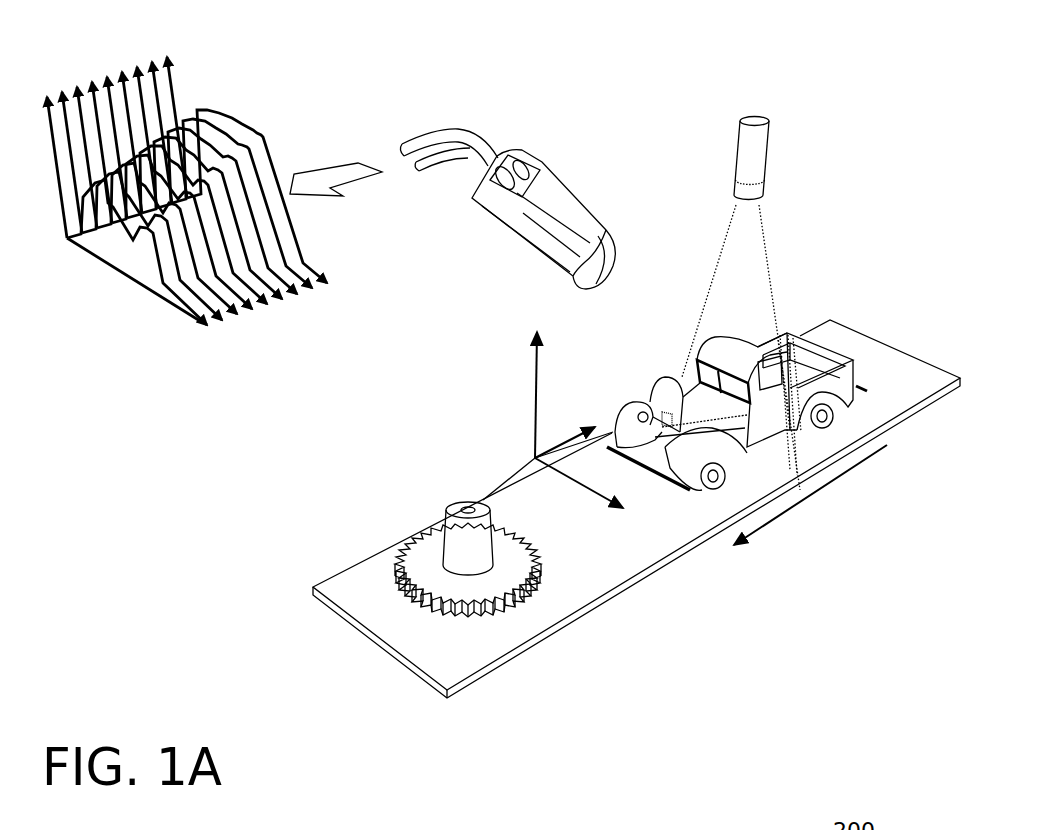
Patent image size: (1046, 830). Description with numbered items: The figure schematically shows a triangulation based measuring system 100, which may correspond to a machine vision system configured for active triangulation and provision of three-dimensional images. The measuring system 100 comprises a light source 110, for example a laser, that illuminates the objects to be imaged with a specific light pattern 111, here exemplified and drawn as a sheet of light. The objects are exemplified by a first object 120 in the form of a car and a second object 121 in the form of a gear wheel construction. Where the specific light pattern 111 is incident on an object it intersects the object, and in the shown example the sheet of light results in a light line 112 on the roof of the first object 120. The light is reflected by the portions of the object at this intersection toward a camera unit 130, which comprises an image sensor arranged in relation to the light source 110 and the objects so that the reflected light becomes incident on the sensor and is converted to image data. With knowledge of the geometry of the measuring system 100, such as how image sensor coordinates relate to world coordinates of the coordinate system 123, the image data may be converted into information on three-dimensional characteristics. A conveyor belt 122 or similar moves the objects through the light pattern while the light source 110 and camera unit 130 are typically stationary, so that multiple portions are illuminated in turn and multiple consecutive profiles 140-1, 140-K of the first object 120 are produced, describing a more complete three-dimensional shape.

The measuring system 100 is at (387, 47).
The light source 110 is at (769, 140).
The specific light pattern 111 is at (758, 293).
The light line 112 is at (732, 357).
The first object 120 is at (650, 395).
The second object 121 is at (460, 496).
The conveyor belt 122 is at (607, 601).
The coordinate system 123 is at (535, 397).
The camera unit 130 is at (547, 168).
The profile 140-1 is at (127, 334).
The profile 140-K is at (247, 170).